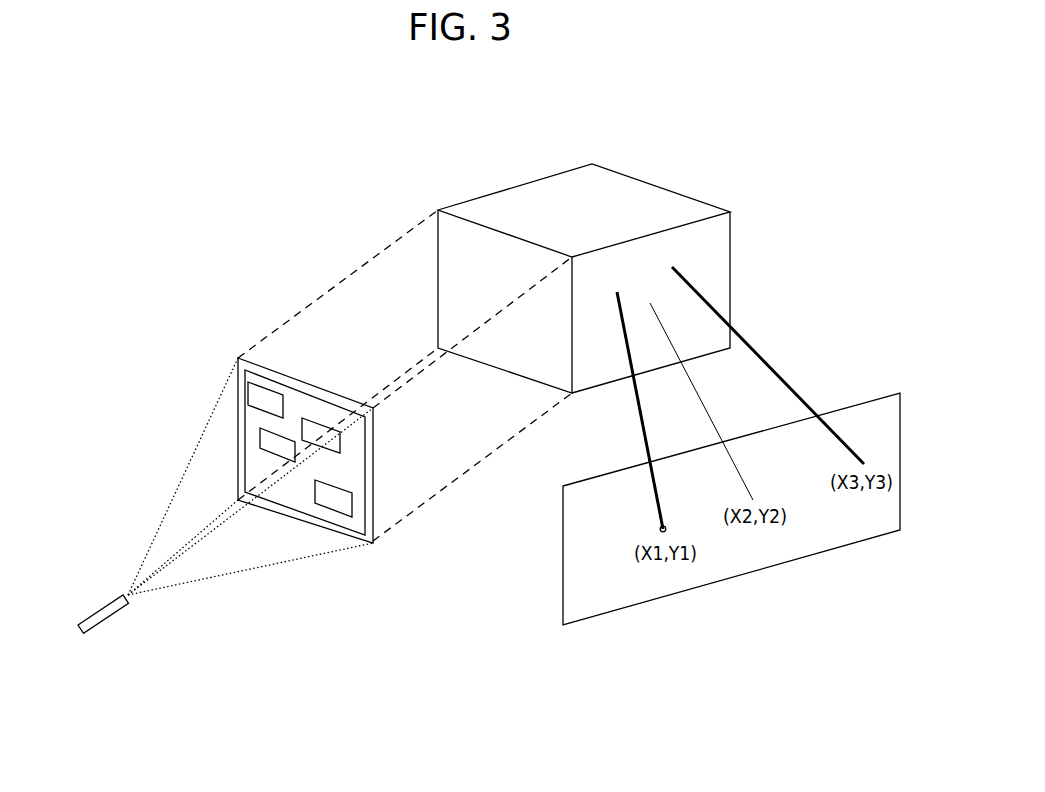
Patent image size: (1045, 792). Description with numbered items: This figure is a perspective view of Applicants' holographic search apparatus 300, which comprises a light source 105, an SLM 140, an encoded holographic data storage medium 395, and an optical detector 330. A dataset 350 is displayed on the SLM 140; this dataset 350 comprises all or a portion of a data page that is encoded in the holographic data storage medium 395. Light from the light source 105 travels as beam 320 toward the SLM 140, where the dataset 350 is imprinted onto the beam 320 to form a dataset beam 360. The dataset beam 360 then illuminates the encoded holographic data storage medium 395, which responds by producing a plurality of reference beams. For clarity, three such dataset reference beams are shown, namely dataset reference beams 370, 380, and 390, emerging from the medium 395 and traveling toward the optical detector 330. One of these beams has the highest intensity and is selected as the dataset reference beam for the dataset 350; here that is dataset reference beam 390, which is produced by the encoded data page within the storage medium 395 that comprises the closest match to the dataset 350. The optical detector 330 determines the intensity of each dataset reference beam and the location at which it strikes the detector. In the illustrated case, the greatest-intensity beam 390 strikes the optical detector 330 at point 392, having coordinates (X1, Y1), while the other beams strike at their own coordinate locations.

The light source 105 is at (107, 614).
The SLM 140 is at (375, 518).
The holographic search apparatus 300 is at (440, 582).
The beam 320 is at (223, 569).
The optical detector 330 is at (642, 603).
The dataset 350 is at (300, 502).
The dataset beam 360 is at (500, 432).
The dataset reference beam 370 is at (773, 373).
The dataset reference beam 380 is at (708, 412).
The dataset reference beam 390 is at (637, 410).
The point 392 is at (660, 529).
The encoded holographic data storage medium 395 is at (643, 190).